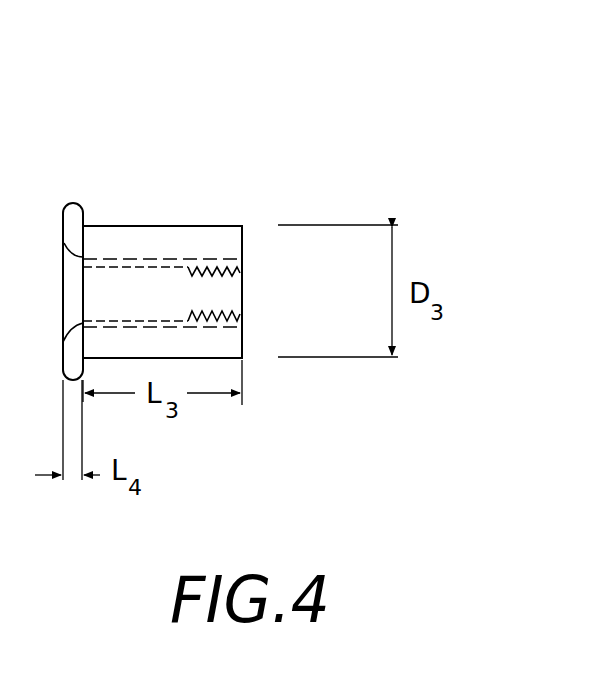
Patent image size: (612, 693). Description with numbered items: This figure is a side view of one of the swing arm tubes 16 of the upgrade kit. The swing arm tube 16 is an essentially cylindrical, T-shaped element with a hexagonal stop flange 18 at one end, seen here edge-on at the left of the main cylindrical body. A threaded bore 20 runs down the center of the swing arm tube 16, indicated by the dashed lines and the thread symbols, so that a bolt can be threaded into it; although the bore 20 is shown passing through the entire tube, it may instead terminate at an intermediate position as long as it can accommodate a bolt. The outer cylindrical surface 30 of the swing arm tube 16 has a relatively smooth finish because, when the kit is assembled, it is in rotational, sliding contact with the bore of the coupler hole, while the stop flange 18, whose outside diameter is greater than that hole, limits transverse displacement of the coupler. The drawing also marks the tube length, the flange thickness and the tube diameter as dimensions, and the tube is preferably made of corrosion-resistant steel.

The swing arm tube 16 is at (121, 137).
The outer cylindrical surface 30 is at (192, 226).
The threaded bore 20 is at (220, 307).
The hexagonal stop flange 18 is at (75, 367).